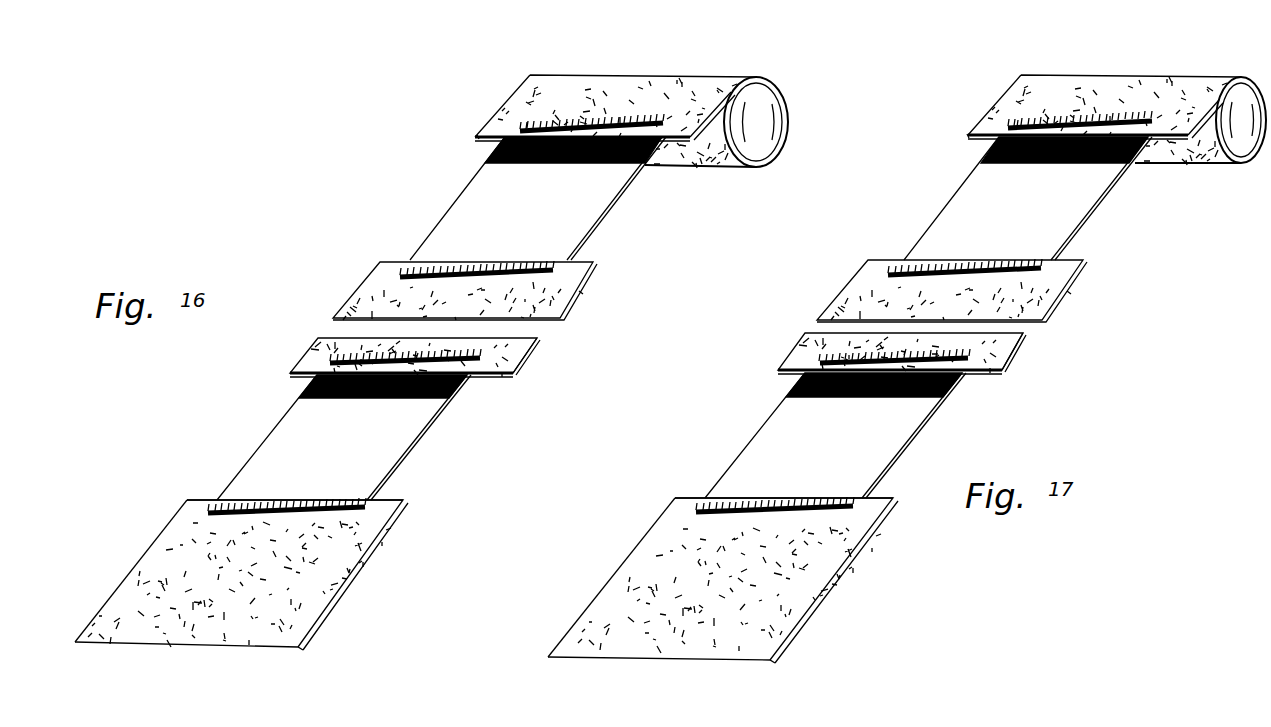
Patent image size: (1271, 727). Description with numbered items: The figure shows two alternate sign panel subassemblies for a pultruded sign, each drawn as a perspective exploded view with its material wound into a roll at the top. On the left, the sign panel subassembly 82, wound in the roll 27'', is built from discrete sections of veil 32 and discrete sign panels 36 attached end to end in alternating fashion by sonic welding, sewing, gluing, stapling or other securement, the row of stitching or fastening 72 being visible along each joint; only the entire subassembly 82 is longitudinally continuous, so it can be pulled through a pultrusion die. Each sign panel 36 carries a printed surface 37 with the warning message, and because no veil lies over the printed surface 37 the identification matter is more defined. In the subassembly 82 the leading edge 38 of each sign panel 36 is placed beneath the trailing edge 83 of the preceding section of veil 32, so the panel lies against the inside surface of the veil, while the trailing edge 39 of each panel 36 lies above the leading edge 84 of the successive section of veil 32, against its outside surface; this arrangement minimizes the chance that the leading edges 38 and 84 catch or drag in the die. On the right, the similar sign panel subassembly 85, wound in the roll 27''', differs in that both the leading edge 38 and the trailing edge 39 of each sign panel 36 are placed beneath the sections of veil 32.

In FIG. 16, the roll 27'' is at (745, 122).
In FIG. 17, the roll 27''' is at (1200, 138).
In FIG. 16, the veil 32 is at (510, 112).
In FIG. 17, the veil 32 is at (968, 133).
In FIG. 16, the sign panel 36 is at (455, 205).
In FIG. 17, the sign panel 36 is at (944, 206).
In FIG. 16, the printed surface 37 is at (586, 220).
In FIG. 17, the printed surface 37 is at (1078, 207).
In FIG. 16, the leading edge 38 is at (566, 296).
In FIG. 17, the leading edge 38 is at (1055, 289).
In FIG. 16, the trailing edge 39 is at (577, 122).
In FIG. 17, the trailing edge 39 is at (1113, 78).
In FIG. 16, the stitching / fastening row 72 is at (655, 120).
In FIG. 17, the stitching / fastening row 72 is at (1012, 124).
In FIG. 16, the sign panel subassembly 82 is at (143, 548).
In FIG. 16, the trailing edge 83 is at (200, 500).
In FIG. 17, the trailing edge 83 is at (690, 498).
In FIG. 16, the leading edge 84 is at (293, 376).
In FIG. 17, the leading edge 84 is at (785, 375).
In FIG. 17, the sign panel subassembly 85 is at (633, 543).